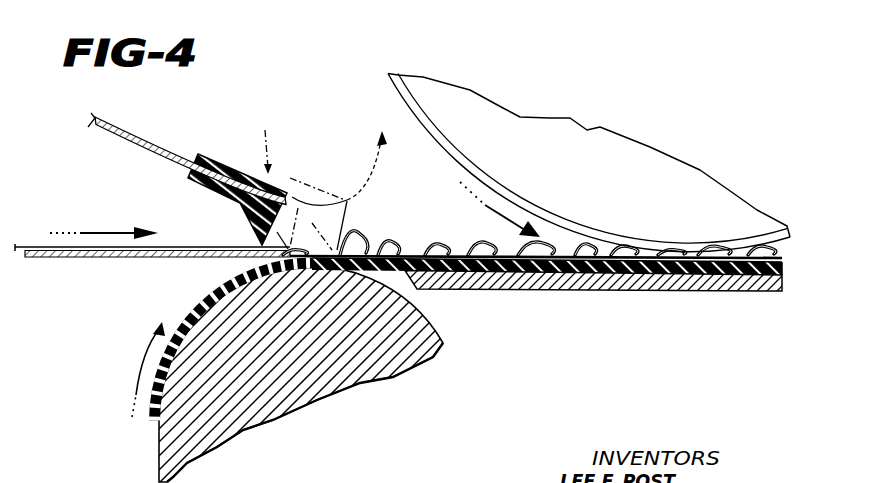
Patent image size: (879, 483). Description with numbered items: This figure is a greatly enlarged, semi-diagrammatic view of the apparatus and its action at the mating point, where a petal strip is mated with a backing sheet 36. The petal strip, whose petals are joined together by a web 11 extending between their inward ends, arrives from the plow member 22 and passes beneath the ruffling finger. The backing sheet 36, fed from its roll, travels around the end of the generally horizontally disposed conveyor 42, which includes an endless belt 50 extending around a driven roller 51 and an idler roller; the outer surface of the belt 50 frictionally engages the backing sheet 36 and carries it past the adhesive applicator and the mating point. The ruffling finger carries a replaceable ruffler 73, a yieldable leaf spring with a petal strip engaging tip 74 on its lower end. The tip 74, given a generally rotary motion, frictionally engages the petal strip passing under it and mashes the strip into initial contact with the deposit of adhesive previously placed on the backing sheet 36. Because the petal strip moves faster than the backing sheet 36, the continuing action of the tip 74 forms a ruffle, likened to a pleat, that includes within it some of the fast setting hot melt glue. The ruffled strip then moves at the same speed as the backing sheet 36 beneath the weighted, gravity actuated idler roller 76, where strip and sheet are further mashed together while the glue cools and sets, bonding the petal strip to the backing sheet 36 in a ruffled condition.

The web 11 is at (34, 242).
The plow member 22 is at (77, 265).
The backing sheet 36 is at (200, 303).
The conveyor 42 is at (540, 285).
The endless belt 50 is at (153, 424).
The driven roller 51 is at (312, 401).
The ruffler 73 is at (150, 141).
The petal strip engaging tip 74 is at (247, 220).
The gravity actuated idler roller 76 is at (607, 97).